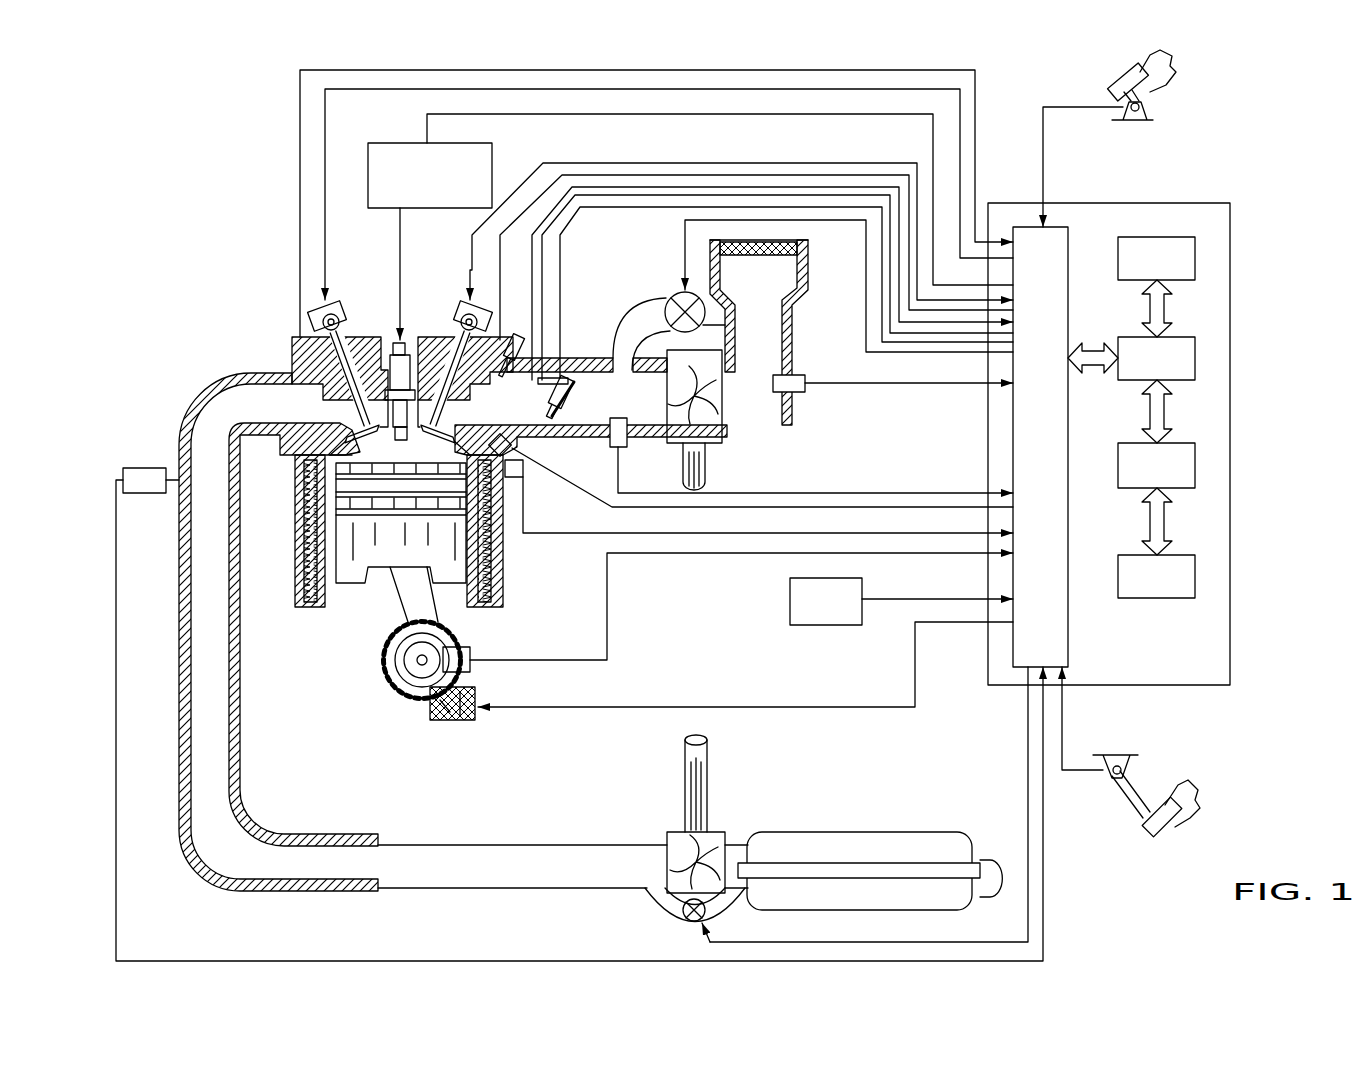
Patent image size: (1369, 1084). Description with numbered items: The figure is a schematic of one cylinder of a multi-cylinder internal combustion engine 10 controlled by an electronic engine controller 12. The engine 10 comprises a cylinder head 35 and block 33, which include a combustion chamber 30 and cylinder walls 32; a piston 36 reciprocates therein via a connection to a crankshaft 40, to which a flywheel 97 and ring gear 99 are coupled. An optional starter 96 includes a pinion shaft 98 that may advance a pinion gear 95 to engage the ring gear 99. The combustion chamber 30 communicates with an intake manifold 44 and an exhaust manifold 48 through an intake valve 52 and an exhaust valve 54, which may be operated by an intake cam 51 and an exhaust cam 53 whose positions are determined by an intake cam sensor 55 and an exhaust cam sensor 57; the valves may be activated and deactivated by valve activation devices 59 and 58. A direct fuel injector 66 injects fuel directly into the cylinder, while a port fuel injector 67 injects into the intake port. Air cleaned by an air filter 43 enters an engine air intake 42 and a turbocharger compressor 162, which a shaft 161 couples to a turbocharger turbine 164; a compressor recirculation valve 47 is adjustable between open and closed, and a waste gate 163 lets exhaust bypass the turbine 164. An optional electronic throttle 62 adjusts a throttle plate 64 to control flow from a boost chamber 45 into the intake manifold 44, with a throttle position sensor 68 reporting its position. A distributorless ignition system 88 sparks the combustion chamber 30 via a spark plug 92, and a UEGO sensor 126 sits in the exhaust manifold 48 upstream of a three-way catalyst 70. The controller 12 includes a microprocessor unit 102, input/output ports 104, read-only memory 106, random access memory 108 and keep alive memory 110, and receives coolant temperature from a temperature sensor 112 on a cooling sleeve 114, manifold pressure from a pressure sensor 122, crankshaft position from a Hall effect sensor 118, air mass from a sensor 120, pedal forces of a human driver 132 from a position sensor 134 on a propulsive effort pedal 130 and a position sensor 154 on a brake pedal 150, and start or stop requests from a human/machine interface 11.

The internal combustion engine 10 is at (222, 290).
The human/machine interface 11 is at (901, 601).
The electronic engine controller 12 is at (1230, 203).
The combustion chamber 30 is at (300, 558).
The cylinder walls 32 is at (340, 605).
The block 33 is at (294, 488).
The cylinder head 35 is at (290, 338).
The piston 36 is at (380, 572).
The crankshaft 40 is at (405, 685).
The engine air intake 42 is at (624, 263).
The air filter 43 is at (775, 258).
The intake manifold 44 is at (512, 412).
The boost chamber 45 is at (617, 412).
The compressor recirculation valve 47 is at (670, 298).
The exhaust manifold 48 is at (247, 419).
The intake cam 51 is at (470, 300).
The intake valve 52 is at (440, 405).
The exhaust cam 53 is at (325, 300).
The exhaust valve 54 is at (322, 393).
The intake cam sensor 55 is at (485, 320).
The exhaust cam sensor 57 is at (312, 318).
The valve activation device 58 is at (341, 323).
The valve activation device 59 is at (460, 322).
The electronic throttle 62 is at (575, 390).
The throttle plate 64 is at (580, 417).
The direct fuel injector 66 is at (512, 452).
The port fuel injector 67 is at (510, 343).
The throttle position sensor 68 is at (572, 374).
The three-way catalyst 70 is at (790, 832).
The distributorless ignition system 88 is at (492, 152).
The spark plug 92 is at (405, 345).
The pinion gear 95 is at (463, 720).
The starter 96 is at (473, 715).
The flywheel 97 is at (398, 670).
The pinion shaft 98 is at (445, 715).
The ring gear 99 is at (418, 690).
The microprocessor unit 102 is at (1195, 357).
The input/output ports 104 is at (1068, 237).
The read-only memory 106 is at (1195, 258).
The random access memory 108 is at (1195, 463).
The keep alive memory 110 is at (1195, 575).
The temperature sensor 112 is at (515, 478).
The cooling sleeve 114 is at (503, 575).
The Hall effect sensor 118 is at (470, 650).
The air mass sensor 120 is at (800, 375).
The pressure sensor 122 is at (610, 440).
The Universal Exhaust Gas Oxygen (UEGO) sensor 126 is at (123, 470).
The propulsive effort pedal 130 is at (1113, 84).
The human driver 132 is at (1162, 64).
The position sensor 134 is at (1147, 110).
The brake pedal 150 is at (1147, 820).
The position sensor 154 is at (1103, 760).
The shaft 161 is at (682, 460).
The turbocharger compressor 162 is at (705, 420).
The waste gate 163 is at (684, 920).
The turbocharger turbine 164 is at (667, 832).